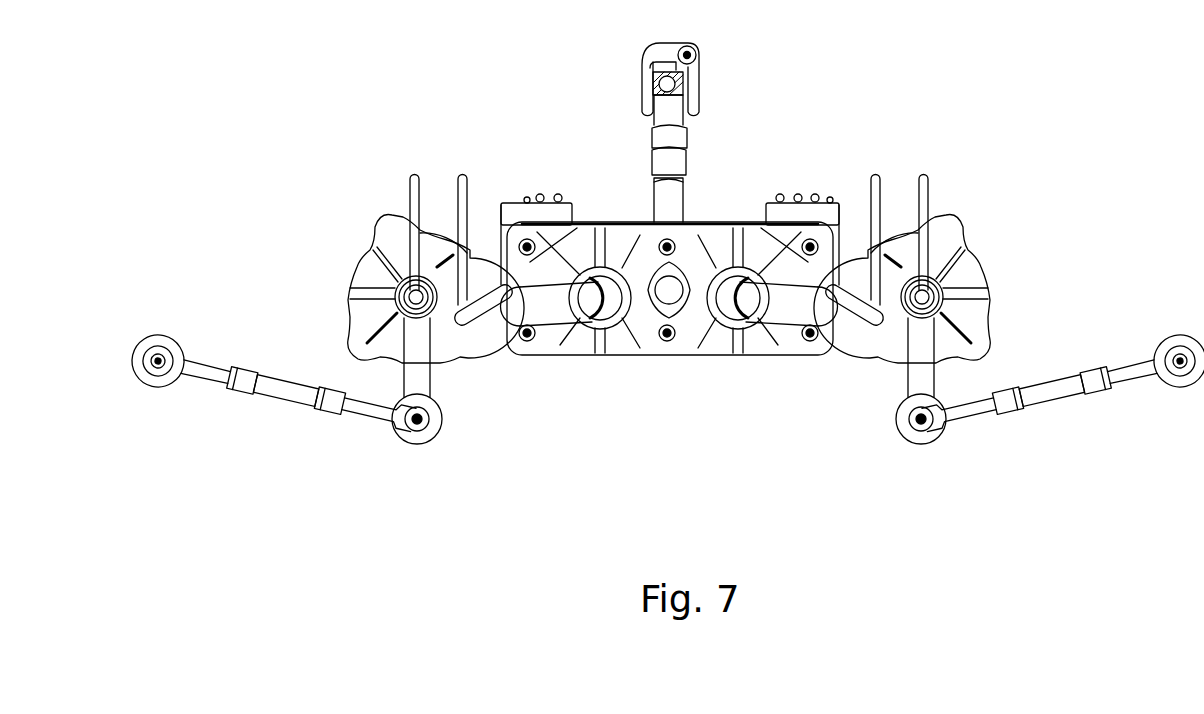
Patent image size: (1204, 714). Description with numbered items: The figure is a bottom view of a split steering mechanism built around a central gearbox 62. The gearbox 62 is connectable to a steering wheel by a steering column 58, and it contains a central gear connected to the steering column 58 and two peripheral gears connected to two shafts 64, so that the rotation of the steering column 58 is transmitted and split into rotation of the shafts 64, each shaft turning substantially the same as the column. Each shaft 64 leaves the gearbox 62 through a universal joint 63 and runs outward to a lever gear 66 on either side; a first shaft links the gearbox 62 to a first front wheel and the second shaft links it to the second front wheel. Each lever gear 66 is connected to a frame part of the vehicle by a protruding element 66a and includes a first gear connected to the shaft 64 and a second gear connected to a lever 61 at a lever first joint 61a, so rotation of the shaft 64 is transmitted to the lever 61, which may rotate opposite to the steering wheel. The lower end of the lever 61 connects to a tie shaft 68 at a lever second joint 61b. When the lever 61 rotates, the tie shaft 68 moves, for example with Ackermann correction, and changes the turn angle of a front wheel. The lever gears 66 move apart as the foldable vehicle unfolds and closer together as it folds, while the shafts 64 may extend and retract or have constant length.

The steering column 58 is at (655, 172).
The lever 61 is at (908, 392).
The lever first joint 61a is at (940, 301).
The lever second joint 61b is at (912, 414).
The gearbox 62 is at (679, 357).
The universal joint 63 is at (738, 360).
The shaft 64 is at (822, 230).
The lever gear 66 is at (940, 295).
The protruding element 66a is at (926, 176).
The tie shaft 68 is at (1045, 404).